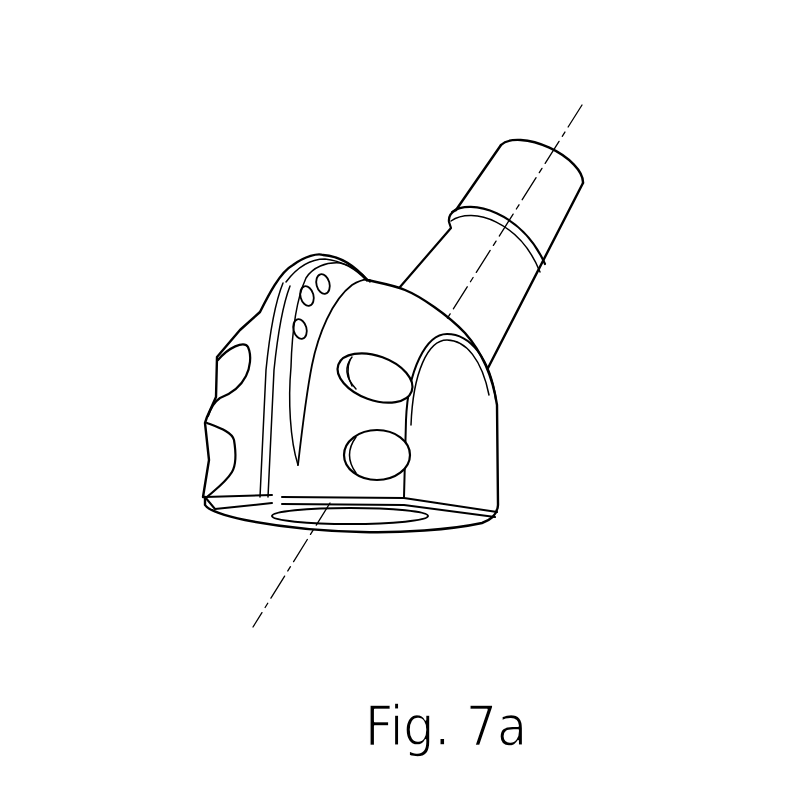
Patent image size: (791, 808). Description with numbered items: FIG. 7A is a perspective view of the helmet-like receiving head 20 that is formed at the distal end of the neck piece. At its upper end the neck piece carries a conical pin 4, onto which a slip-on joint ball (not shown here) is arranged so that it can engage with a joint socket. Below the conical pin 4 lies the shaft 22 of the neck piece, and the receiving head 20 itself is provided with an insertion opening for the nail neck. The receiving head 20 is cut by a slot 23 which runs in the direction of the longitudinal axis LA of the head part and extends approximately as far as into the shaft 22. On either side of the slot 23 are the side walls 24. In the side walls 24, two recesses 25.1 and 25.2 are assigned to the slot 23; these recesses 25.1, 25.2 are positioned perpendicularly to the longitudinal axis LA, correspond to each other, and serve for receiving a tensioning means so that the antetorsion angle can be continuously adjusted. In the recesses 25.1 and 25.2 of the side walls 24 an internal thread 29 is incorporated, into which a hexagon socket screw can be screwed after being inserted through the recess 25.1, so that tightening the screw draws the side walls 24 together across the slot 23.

The conical pin 4 is at (588, 182).
The receiving head 20 is at (252, 277).
The shaft 22 is at (523, 300).
The slot 23 is at (265, 483).
The side walls 24 is at (318, 478).
The recess 25.1 is at (400, 360).
The recess 25.2 is at (213, 398).
The internal thread 29 is at (360, 353).
The longitudinal axis LA is at (435, 339).